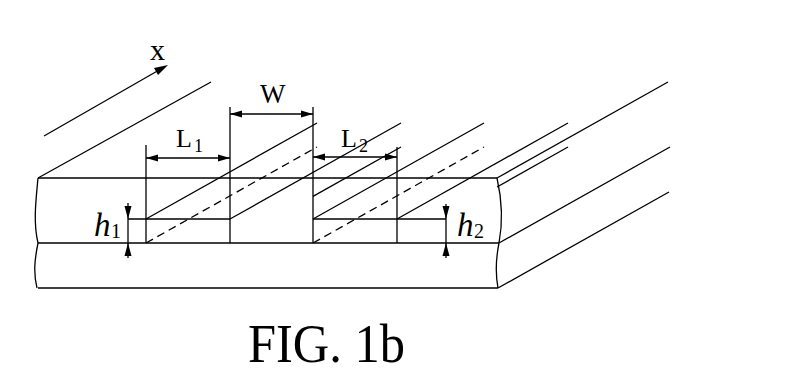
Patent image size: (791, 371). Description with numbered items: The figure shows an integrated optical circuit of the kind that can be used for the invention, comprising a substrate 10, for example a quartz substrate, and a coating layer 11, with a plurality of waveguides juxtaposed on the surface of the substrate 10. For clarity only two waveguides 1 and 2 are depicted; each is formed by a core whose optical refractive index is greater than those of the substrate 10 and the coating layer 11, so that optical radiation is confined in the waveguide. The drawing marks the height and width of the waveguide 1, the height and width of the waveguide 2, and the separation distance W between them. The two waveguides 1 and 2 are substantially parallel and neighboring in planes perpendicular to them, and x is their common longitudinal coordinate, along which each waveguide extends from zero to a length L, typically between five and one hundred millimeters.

The waveguide 1 is at (221, 217).
The waveguide 2 is at (388, 216).
The substrate 10 is at (292, 282).
The coating layer 11 is at (83, 217).